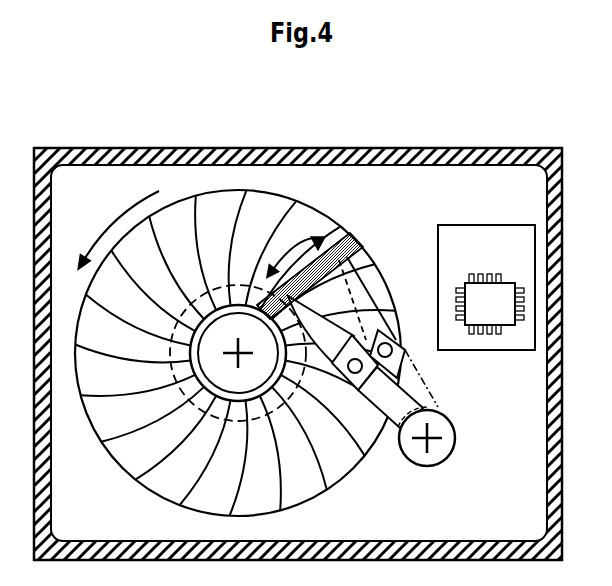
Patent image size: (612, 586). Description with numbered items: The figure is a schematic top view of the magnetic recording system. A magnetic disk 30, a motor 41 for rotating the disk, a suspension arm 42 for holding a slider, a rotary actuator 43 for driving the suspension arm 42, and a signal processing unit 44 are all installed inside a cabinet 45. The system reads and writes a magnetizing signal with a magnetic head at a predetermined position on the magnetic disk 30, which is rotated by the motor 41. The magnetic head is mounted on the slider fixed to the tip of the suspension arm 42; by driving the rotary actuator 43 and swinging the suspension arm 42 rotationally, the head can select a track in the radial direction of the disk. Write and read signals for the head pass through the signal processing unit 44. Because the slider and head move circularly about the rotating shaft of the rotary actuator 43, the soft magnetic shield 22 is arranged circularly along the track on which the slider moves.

The soft magnetic shield 22 is at (348, 238).
The magnetic disk 30 is at (143, 470).
The motor 41 is at (197, 402).
The suspension arm 42 is at (378, 400).
The rotary actuator 43 is at (443, 433).
The signal processing unit 44 is at (486, 291).
The cabinet 45 is at (153, 156).